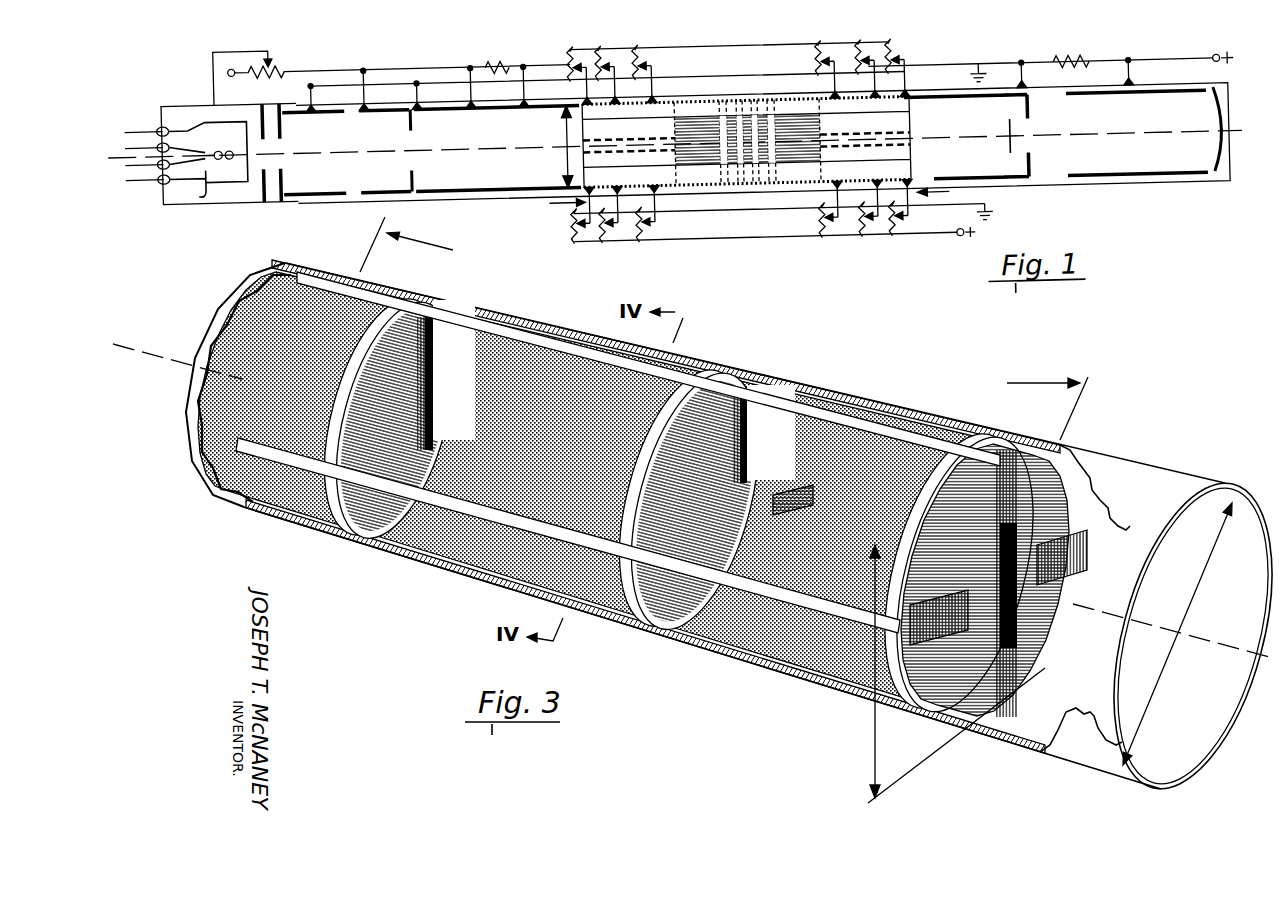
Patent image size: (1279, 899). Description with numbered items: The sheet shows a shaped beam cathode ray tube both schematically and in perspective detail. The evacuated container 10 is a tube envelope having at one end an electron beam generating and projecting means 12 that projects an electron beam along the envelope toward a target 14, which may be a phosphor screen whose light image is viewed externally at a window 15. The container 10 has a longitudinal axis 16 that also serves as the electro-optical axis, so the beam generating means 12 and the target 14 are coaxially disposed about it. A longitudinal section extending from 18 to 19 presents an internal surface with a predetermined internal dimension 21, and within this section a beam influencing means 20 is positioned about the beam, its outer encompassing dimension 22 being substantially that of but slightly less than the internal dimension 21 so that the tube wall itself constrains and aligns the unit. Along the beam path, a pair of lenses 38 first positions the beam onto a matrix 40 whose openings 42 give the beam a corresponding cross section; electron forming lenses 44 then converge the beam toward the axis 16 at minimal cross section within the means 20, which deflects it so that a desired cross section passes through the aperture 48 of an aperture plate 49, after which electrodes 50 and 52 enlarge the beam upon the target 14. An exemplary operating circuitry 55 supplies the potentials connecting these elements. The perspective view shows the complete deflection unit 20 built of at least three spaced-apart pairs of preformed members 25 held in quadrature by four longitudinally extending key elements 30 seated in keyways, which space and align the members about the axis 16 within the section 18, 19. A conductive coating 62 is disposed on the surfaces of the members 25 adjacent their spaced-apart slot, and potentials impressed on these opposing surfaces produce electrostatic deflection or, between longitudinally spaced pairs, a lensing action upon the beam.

In FIG. 1, the evacuated container 10 is at (527, 200).
In FIG. 3, the evacuated container 10 is at (1120, 456).
In FIG. 1, the electron beam generating and projecting means 12 is at (290, 203).
In FIG. 1, the target 14 is at (1212, 160).
In FIG. 1, the window 15 is at (1232, 133).
In FIG. 1, the longitudinal axis 16 is at (1125, 146).
In FIG. 3, the longitudinal axis 16 is at (1218, 650).
In FIG. 1, the longitudinal section start 18 is at (553, 205).
In FIG. 3, the longitudinal section start 18 is at (420, 244).
In FIG. 1, the longitudinal section end 19 is at (947, 192).
In FIG. 3, the longitudinal section end 19 is at (1034, 401).
In FIG. 1, the beam influencing means 20 is at (776, 276).
In FIG. 3, the beam influencing means 20 is at (712, 704).
In FIG. 1, the predetermined internal dimension 21 is at (560, 147).
In FIG. 3, the predetermined internal dimension 21 is at (1225, 505).
In FIG. 3, the outer encompassing dimension 22 is at (866, 790).
In FIG. 3, the preformed member 25 is at (413, 320).
In FIG. 3, the key element 30 is at (1015, 662).
In FIG. 1, the lenses 38 is at (345, 188).
In FIG. 1, the matrix 40 is at (414, 190).
In FIG. 1, the openings 42 is at (412, 166).
In FIG. 1, the electron forming lenses 44 is at (478, 190).
In FIG. 1, the aperture 48 is at (1033, 180).
In FIG. 1, the aperture plate 49 is at (1012, 190).
In FIG. 1, the electrode 50 is at (1070, 190).
In FIG. 1, the electrode 52 is at (1130, 188).
In FIG. 1, the operating circuitry 55 is at (460, 52).
In FIG. 3, the conductive coating 62 is at (310, 523).